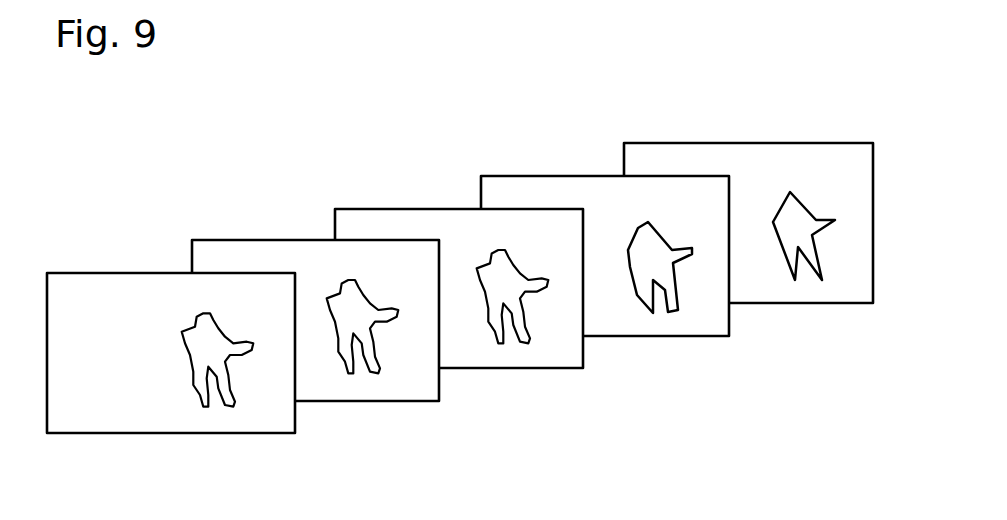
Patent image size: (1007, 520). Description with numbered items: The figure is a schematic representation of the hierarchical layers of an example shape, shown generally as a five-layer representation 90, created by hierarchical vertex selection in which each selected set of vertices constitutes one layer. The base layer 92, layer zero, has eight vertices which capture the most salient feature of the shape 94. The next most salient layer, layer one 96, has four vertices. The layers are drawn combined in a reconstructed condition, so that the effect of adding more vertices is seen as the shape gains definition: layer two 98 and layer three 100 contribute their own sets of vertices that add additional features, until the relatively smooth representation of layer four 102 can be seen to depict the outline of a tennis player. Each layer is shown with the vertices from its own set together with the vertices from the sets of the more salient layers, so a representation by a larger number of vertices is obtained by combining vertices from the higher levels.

The five-layer representation 90 is at (647, 60).
The base layer 92 is at (707, 143).
The shape 94 is at (783, 205).
The Layer 1 96 is at (532, 176).
The Layer 2 98 is at (372, 209).
The Layer 3 100 is at (217, 240).
The Layer 4 102 is at (113, 273).